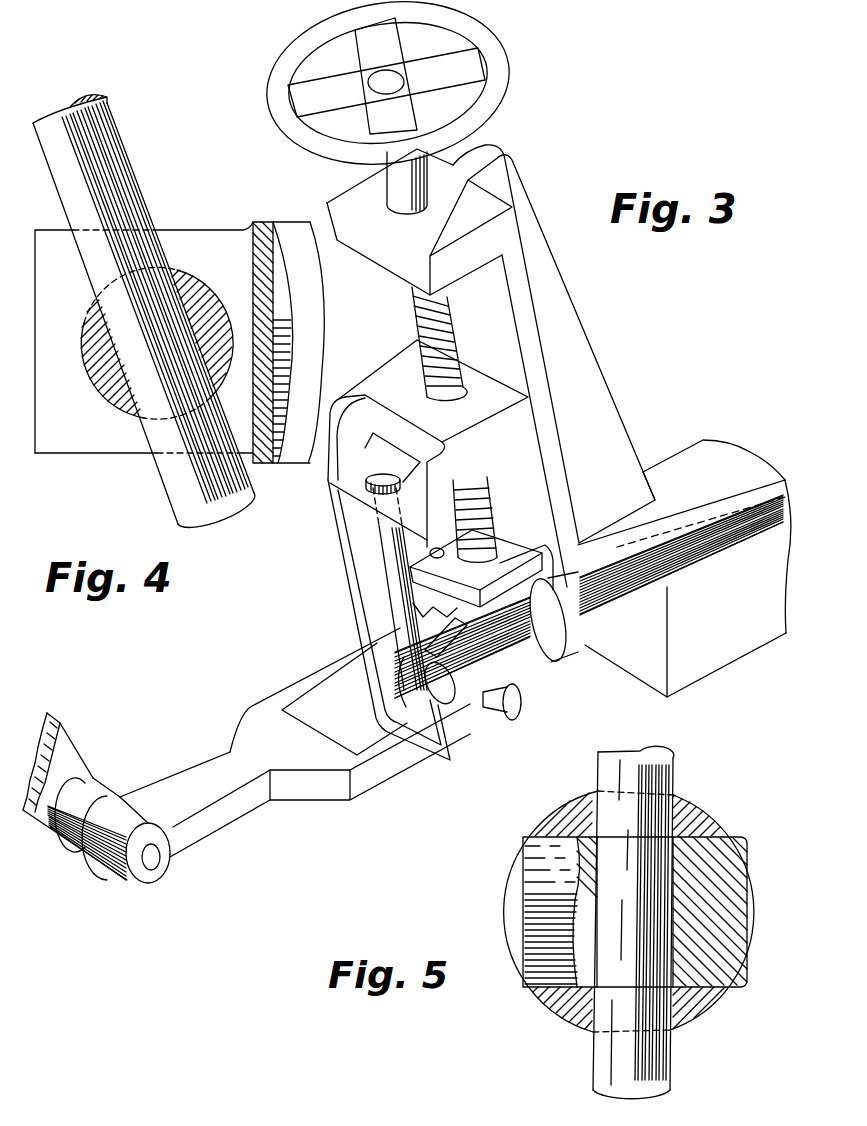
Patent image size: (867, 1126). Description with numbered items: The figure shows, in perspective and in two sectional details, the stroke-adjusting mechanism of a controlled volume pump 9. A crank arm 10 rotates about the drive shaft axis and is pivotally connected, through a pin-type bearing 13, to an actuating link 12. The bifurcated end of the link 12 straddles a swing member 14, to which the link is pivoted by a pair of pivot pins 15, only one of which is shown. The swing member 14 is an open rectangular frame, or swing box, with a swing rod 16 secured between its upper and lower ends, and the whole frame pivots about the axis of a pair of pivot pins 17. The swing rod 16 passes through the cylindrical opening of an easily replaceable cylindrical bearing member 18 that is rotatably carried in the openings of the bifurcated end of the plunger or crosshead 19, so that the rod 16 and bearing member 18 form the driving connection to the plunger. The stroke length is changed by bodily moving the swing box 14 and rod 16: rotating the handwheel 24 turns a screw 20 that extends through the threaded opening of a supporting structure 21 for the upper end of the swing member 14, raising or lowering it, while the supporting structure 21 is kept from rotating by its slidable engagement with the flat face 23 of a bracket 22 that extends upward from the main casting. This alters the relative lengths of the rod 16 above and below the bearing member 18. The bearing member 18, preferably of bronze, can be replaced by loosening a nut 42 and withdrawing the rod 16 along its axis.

In FIG. 3, the controlled volume pump 9 is at (678, 407).
In FIG. 3, the crank arm 10 is at (96, 797).
In FIG. 3, the actuating link 12 is at (240, 810).
In FIG. 3, the pin-type bearing 13 is at (147, 860).
In FIG. 3, the swing member 14 is at (347, 563).
In FIG. 3, the pivot pin 15 is at (487, 714).
In FIG. 3, the swing rod 16 is at (407, 626).
In FIG. 4, the swing rod 16 is at (102, 110).
In FIG. 5, the swing rod 16 is at (663, 782).
In FIG. 3, the pivot pin 17 is at (444, 551).
In FIG. 3, the bearing member 18 is at (443, 690).
In FIG. 4, the bearing member 18 is at (108, 395).
In FIG. 5, the bearing member 18 is at (530, 903).
In FIG. 3, the plunger 19 is at (515, 645).
In FIG. 4, the plunger 19 is at (173, 238).
In FIG. 5, the plunger 19 is at (700, 1007).
In FIG. 3, the screw 20 is at (422, 315).
In FIG. 3, the supporting structure 21 is at (395, 373).
In FIG. 3, the bracket 22 is at (583, 362).
In FIG. 3, the flat face 23 is at (500, 303).
In FIG. 3, the handwheel 24 is at (282, 102).
In FIG. 3, the nut 42 is at (366, 487).